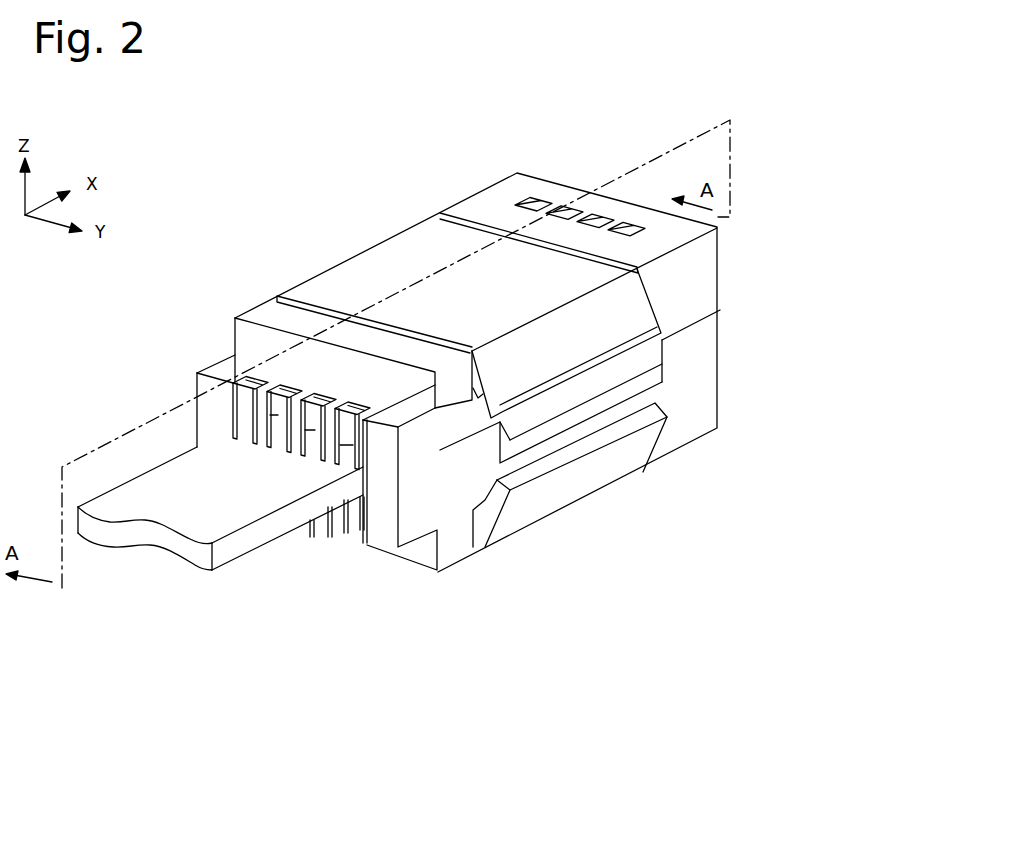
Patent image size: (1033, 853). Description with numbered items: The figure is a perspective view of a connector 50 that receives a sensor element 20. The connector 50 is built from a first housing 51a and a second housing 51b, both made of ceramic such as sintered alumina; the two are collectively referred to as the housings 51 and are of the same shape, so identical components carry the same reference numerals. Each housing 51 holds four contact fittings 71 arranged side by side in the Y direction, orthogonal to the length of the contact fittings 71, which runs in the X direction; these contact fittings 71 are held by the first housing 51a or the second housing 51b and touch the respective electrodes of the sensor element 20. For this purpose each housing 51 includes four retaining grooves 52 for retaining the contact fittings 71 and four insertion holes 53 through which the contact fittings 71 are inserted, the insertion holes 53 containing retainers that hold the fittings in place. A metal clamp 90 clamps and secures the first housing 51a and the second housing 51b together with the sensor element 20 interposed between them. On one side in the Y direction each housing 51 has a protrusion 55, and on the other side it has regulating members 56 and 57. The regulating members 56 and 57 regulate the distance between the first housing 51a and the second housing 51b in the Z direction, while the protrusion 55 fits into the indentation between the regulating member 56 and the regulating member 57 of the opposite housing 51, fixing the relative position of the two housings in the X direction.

The connector 50 is at (806, 157).
The metal clamp 90 is at (440, 243).
The insertion holes 53 is at (626, 233).
The retaining grooves 52 is at (340, 407).
The contact fittings 71 is at (352, 448).
The sensor element 20 is at (237, 543).
The regulating member 56 is at (462, 455).
The regulating member 57 is at (695, 338).
The protrusion 55 is at (645, 362).
The housings 51 is at (638, 464).
The first housing 51a is at (467, 422).
The second housing 51b is at (667, 440).